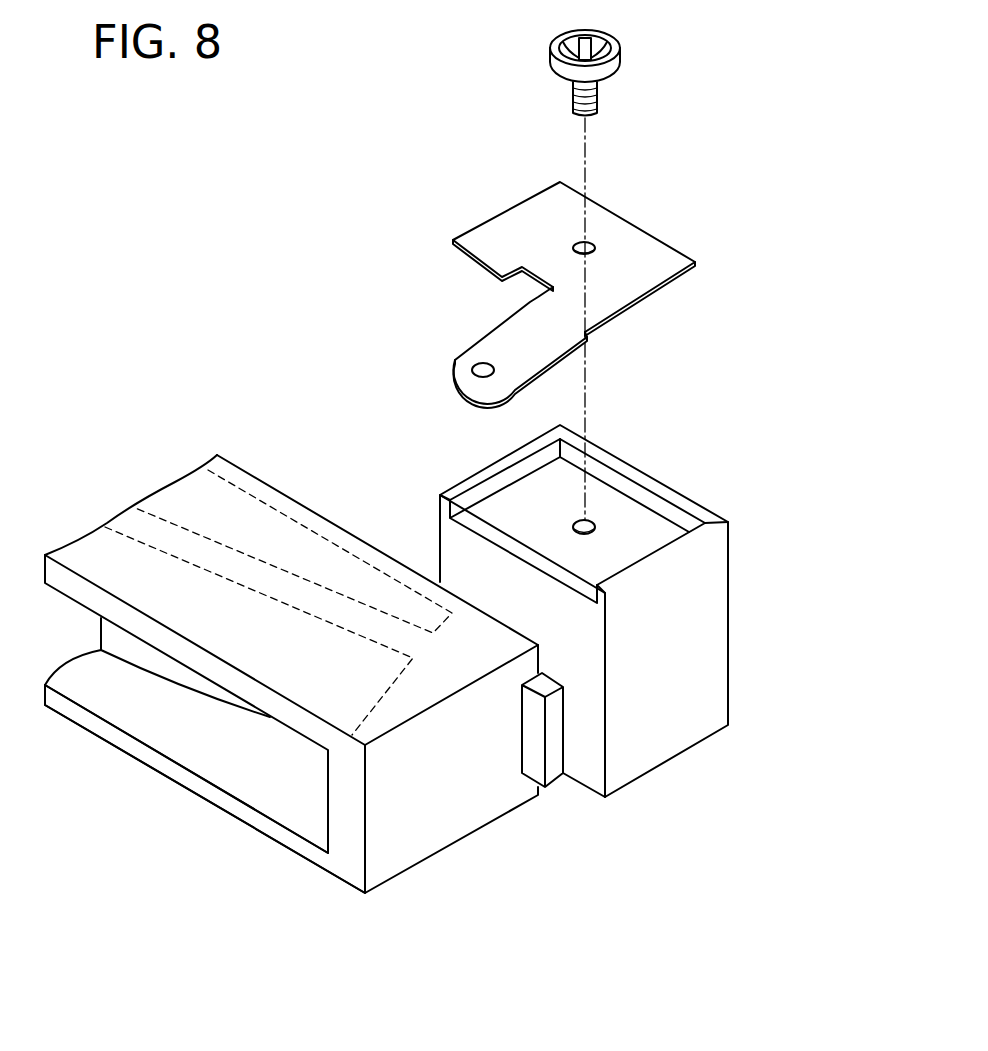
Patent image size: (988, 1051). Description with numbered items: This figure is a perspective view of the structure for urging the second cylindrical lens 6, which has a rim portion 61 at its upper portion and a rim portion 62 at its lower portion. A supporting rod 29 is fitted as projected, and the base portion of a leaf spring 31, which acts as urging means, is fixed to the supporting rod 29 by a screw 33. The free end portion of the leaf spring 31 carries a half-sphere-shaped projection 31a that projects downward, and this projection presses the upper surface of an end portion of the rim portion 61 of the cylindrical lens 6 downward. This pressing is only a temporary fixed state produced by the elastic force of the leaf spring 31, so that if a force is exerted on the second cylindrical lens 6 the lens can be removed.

The screw 33 is at (600, 60).
The leaf spring 31 is at (565, 288).
The half-sphere-shaped projection 31a is at (483, 360).
The supporting rod 29 is at (717, 610).
The second cylindrical lens 6 is at (296, 674).
The rim portion 61 is at (42, 553).
The rim portion 62 is at (60, 712).